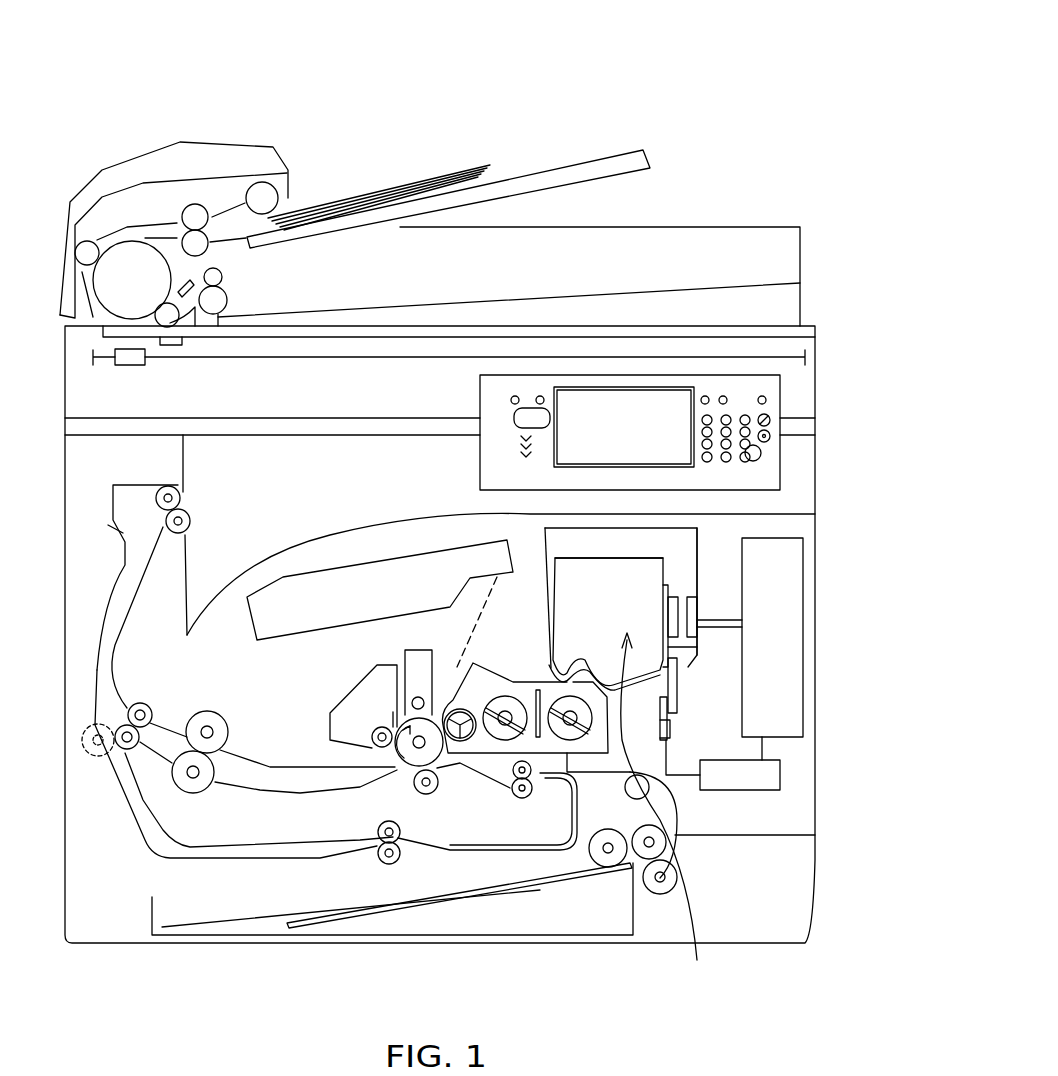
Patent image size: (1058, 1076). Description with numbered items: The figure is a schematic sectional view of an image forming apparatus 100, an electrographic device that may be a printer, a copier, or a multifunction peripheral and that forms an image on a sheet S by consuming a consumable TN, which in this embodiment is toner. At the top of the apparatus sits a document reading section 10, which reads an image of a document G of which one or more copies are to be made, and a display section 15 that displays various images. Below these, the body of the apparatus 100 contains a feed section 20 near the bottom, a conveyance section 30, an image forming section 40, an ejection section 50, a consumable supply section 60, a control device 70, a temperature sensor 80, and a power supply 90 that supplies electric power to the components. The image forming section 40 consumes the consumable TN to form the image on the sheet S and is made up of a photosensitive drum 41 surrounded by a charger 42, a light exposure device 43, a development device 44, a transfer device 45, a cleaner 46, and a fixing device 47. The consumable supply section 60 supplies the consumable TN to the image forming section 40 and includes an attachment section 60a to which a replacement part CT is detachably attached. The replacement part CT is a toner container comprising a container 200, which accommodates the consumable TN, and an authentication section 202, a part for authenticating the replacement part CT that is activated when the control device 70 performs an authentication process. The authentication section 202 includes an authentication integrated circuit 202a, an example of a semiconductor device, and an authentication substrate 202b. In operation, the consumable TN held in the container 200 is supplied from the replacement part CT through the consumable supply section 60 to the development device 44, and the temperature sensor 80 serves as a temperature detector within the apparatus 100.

The image forming apparatus 100 is at (752, 85).
The document reading section 10 is at (312, 148).
The document G is at (437, 176).
The display section 15 is at (601, 387).
The ejection section 50 is at (197, 500).
The light exposure device 43 is at (342, 567).
The image forming section 40 is at (295, 690).
The fixing device 47 is at (222, 782).
The cleaner 46 is at (350, 692).
The charger 42 is at (431, 650).
The photosensitive drum 41 is at (405, 768).
The transfer device 45 is at (434, 792).
The development device 44 is at (540, 740).
The replacement part CT is at (590, 527).
The container 200 is at (635, 558).
The attachment section 60a is at (570, 553).
The consumable supply section 60 is at (698, 542).
The authentication section 202 is at (673, 572).
The authentication integrated circuit 202a is at (673, 592).
The authentication substrate 202b is at (697, 650).
The control device 70 is at (803, 597).
The temperature sensor 80 is at (697, 627).
The power supply 90 is at (790, 778).
The conveyance section 30 is at (693, 862).
The consumable TN is at (667, 822).
The feed section 20 is at (145, 912).
The sheet S is at (343, 906).